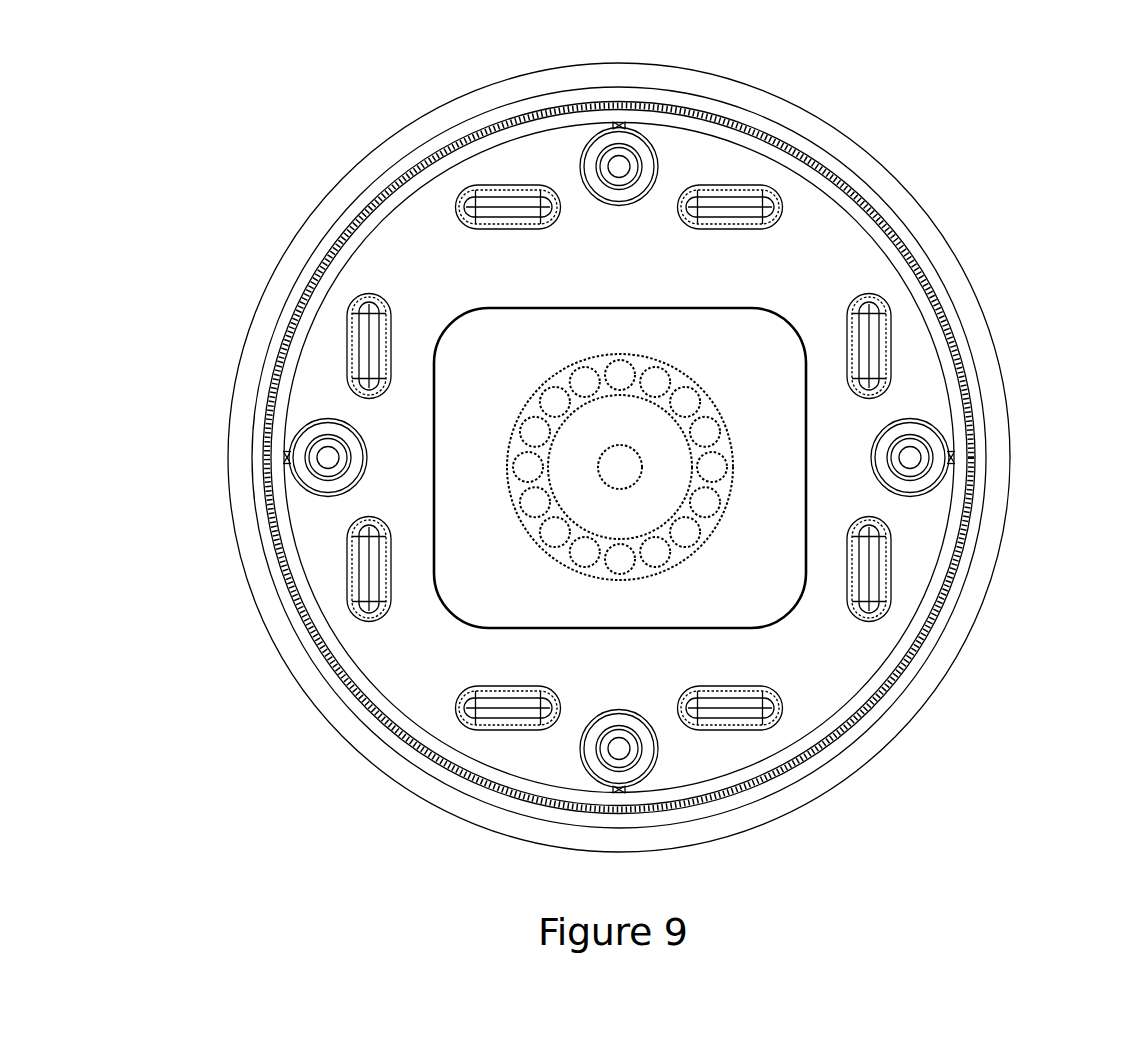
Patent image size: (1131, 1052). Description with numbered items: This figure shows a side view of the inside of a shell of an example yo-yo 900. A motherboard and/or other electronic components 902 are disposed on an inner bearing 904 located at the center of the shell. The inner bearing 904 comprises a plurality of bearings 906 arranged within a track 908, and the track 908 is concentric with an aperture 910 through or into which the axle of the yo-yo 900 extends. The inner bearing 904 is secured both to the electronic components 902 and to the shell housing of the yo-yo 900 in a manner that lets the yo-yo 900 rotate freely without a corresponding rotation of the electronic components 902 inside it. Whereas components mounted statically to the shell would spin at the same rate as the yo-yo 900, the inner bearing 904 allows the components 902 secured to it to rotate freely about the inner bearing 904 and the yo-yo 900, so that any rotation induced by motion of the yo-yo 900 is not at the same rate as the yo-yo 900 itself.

The yo-yo 900 is at (936, 165).
The electronic components 902 is at (477, 368).
The inner bearing 904 is at (619, 566).
The bearings 906 is at (692, 535).
The track 908 is at (725, 490).
The aperture 910 is at (620, 467).